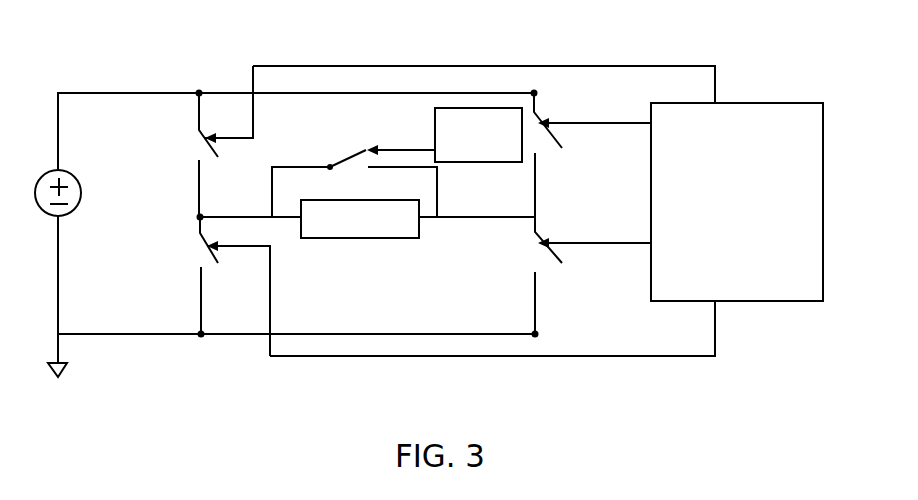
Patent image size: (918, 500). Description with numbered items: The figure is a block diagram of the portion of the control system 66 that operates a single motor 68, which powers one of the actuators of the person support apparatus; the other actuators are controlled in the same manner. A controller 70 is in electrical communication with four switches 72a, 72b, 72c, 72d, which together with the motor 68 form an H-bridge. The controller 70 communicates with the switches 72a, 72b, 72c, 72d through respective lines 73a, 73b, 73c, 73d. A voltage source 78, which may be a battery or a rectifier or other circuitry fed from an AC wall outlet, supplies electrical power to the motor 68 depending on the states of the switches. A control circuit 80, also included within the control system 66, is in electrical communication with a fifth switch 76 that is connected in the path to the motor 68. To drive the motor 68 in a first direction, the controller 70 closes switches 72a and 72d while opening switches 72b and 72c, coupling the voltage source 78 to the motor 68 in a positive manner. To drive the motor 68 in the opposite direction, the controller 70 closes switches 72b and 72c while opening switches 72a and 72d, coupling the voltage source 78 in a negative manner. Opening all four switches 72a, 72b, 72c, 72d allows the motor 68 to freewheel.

The control system 66 is at (785, 40).
The motor 68 is at (363, 238).
The controller 70 is at (793, 301).
The switch 72a is at (218, 150).
The switch 72b is at (217, 257).
The switch 72c is at (558, 148).
The switch 72d is at (560, 264).
The line 73a is at (467, 64).
The line 73b is at (647, 357).
The line 73c is at (605, 120).
The line 73d is at (606, 242).
The fifth switch 76 is at (330, 165).
The voltage source 78 is at (82, 194).
The control circuit 80 is at (467, 162).